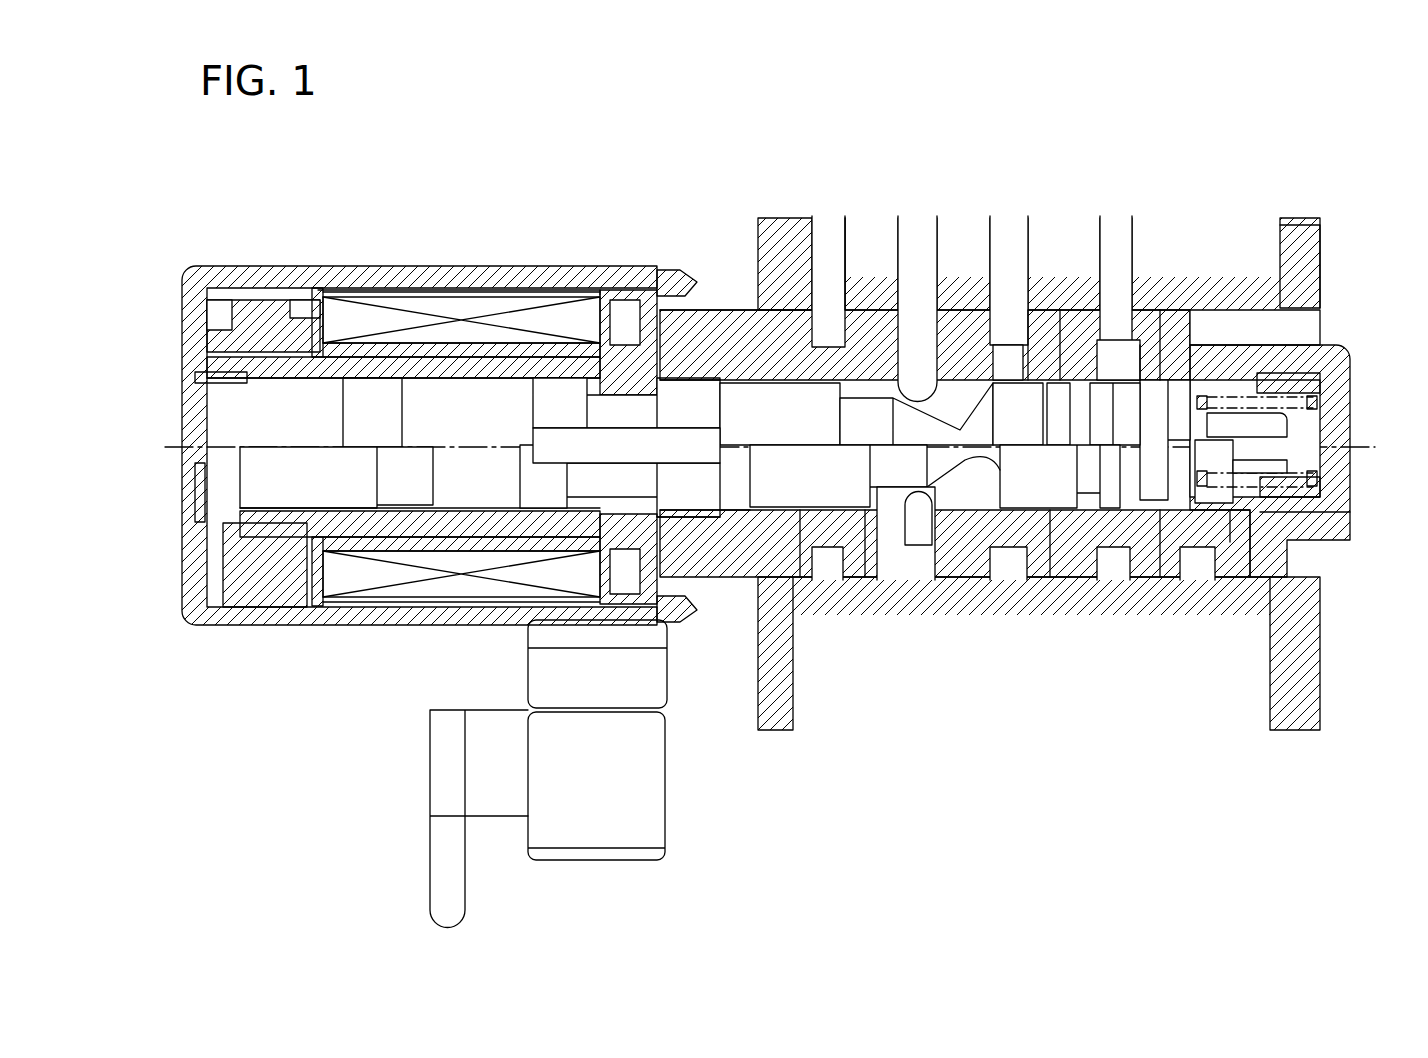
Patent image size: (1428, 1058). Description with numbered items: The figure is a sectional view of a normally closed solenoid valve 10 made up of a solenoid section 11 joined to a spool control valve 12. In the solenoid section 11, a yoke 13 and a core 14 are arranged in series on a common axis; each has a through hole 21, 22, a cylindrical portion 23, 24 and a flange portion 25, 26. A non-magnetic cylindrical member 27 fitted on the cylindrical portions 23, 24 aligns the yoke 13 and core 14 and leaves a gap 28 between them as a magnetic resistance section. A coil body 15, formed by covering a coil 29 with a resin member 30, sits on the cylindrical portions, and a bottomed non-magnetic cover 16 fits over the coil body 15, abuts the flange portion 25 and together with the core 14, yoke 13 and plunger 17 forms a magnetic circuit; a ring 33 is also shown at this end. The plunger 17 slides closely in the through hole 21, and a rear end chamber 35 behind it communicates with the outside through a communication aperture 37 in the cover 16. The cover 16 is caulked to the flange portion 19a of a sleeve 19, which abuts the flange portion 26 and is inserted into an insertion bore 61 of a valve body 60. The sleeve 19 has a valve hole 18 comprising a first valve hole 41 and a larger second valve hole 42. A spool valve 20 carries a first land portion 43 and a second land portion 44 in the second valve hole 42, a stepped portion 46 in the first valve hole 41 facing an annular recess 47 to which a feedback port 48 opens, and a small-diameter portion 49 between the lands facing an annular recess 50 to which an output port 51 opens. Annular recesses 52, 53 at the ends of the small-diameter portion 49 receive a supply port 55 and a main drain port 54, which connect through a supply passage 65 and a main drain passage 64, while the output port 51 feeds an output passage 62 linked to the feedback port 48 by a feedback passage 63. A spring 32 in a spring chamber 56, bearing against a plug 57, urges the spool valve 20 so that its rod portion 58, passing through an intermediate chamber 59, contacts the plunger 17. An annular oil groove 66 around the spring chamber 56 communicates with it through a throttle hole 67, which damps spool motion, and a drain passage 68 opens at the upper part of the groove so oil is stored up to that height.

The solenoid valve 10 is at (710, 185).
The solenoid section 11 is at (420, 240).
The spool control valve 12 is at (737, 590).
The yoke 13 is at (283, 320).
The core 14 is at (640, 300).
The coil body 15 is at (545, 320).
The cover 16 is at (510, 280).
The plunger 17 is at (352, 490).
The valve hole 18 is at (1165, 375).
The sleeve 19 is at (745, 325).
The flange portion 19a is at (683, 430).
The spool valve 20 is at (1057, 530).
The through hole 21 is at (280, 500).
The through hole 22 is at (655, 595).
The cylindrical portion 23 is at (412, 520).
The cylindrical portion 24 is at (540, 622).
The flange portion 25 is at (240, 325).
The flange portion 26 is at (618, 330).
The cylindrical member 27 is at (485, 330).
The gap 28 is at (490, 620).
The coil 29 is at (372, 315).
The resin member 30 is at (590, 315).
The spring 32 is at (1300, 400).
The ring 33 is at (300, 310).
The rear end chamber 35 is at (220, 498).
The communication aperture 37 is at (300, 600).
The first valve hole 41 is at (1160, 505).
The second valve hole 42 is at (875, 520).
The first land portion 43 is at (955, 385).
The second land portion 44 is at (780, 400).
The stepped portion 46 is at (1108, 560).
The annular recess 47 is at (1135, 370).
The feedback port 48 is at (1100, 330).
The small-diameter portion 49 is at (962, 470).
The annular recess 50 is at (945, 385).
The output port 51 is at (915, 560).
The annular recess 52 is at (1008, 560).
The annular recess 53 is at (820, 535).
The main drain port 54 is at (832, 560).
The supply port 55 is at (1020, 330).
The spring chamber 56 is at (1272, 520).
The plug 57 is at (1345, 468).
The rod portion 58 is at (715, 320).
The intermediate chamber 59 is at (700, 500).
The valve body 60 is at (862, 235).
The insertion bore 61 is at (1045, 360).
The output passage 62 is at (910, 235).
The feedback passage 63 is at (1120, 370).
The main drain passage 64 is at (823, 235).
The supply passage 65 is at (1005, 235).
The annular oil groove 66 is at (1238, 558).
The throttle hole 67 is at (1225, 520).
The drain passage 68 is at (1290, 275).